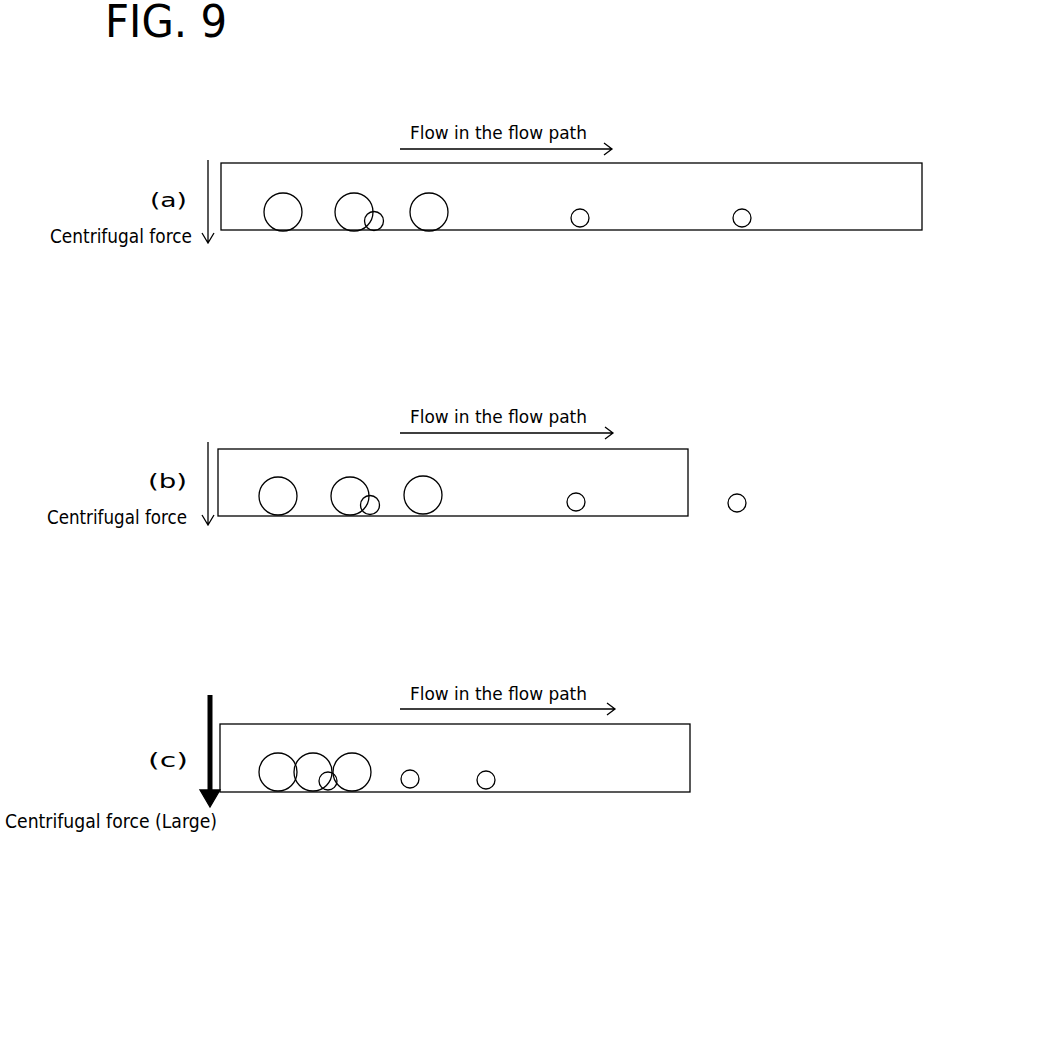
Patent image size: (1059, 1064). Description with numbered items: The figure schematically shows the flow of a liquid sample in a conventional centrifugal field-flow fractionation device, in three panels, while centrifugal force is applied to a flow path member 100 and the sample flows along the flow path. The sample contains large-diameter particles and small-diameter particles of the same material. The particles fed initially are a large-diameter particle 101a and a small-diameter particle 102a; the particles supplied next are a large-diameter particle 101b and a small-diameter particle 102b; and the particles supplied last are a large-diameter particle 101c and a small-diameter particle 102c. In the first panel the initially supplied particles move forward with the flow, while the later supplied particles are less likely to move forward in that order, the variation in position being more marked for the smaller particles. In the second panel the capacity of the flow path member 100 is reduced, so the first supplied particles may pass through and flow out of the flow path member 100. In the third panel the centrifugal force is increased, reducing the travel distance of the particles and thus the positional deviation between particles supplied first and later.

The flow path member 100 is at (815, 162).
The large-diameter particle 101a is at (447, 224).
The large-diameter particle 101b is at (335, 230).
The large-diameter particle 101c is at (265, 230).
The small-diameter particle 102a is at (753, 222).
The small-diameter particle 102b is at (588, 222).
The small-diameter particle 102c is at (388, 228).